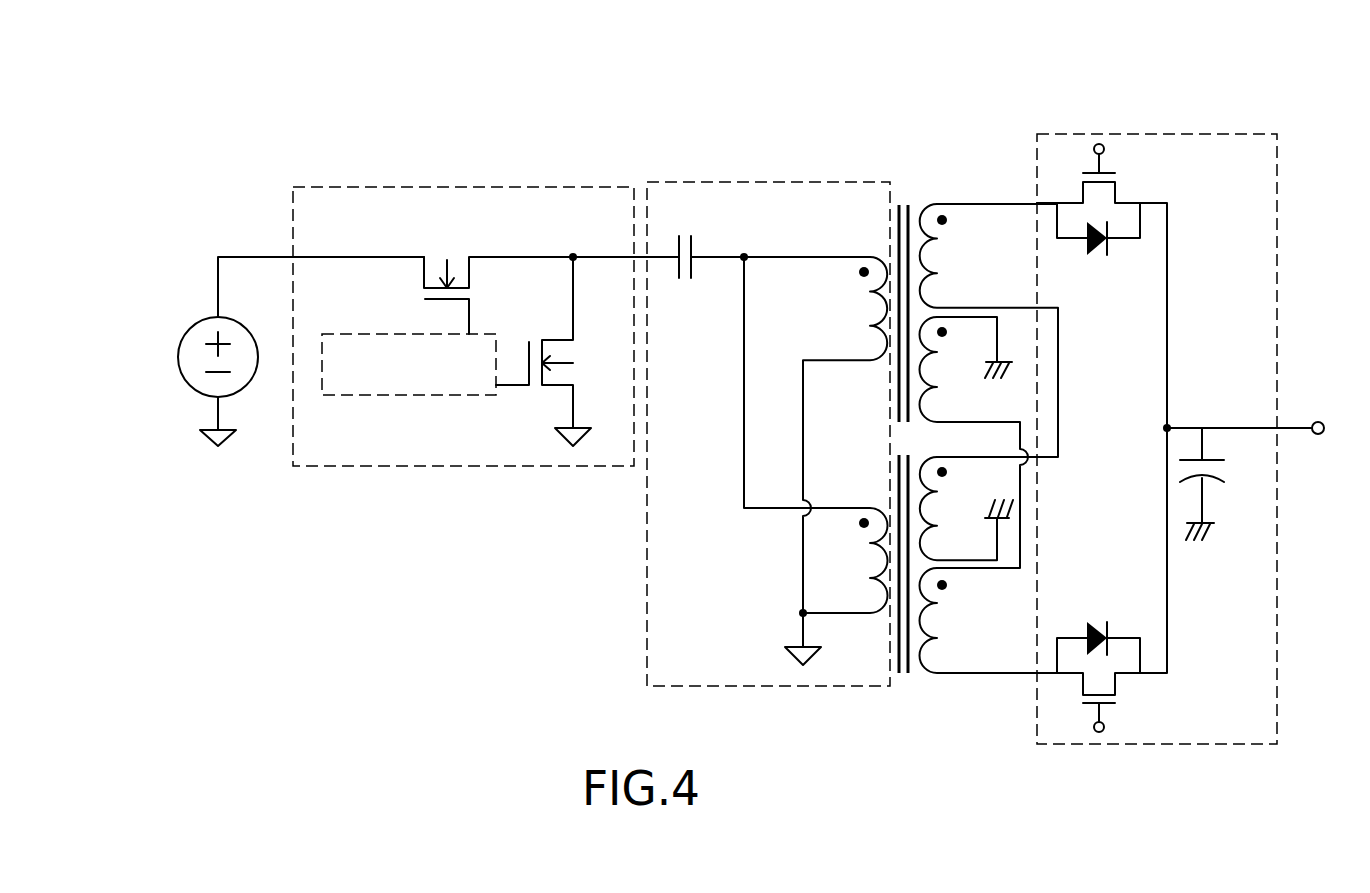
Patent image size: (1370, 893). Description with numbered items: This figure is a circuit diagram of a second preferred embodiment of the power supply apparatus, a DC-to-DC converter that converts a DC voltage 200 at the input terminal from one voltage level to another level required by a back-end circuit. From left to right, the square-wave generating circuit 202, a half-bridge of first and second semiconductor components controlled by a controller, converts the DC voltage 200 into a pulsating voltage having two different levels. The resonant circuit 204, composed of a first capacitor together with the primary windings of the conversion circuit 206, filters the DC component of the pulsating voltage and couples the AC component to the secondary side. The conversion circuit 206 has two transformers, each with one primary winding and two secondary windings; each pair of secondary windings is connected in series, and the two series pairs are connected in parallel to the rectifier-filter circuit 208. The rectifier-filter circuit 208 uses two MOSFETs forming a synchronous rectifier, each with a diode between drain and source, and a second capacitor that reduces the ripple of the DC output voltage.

The DC voltage 200 is at (193, 355).
The square-wave generating circuit 202 is at (430, 187).
The resonant circuit 204 is at (740, 182).
The conversion circuit 206 is at (938, 165).
The rectifier-filter circuit 208 is at (1212, 134).